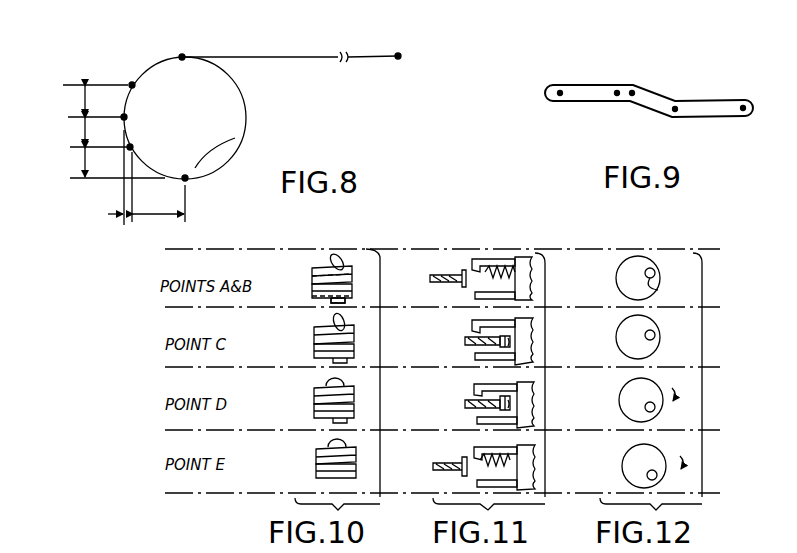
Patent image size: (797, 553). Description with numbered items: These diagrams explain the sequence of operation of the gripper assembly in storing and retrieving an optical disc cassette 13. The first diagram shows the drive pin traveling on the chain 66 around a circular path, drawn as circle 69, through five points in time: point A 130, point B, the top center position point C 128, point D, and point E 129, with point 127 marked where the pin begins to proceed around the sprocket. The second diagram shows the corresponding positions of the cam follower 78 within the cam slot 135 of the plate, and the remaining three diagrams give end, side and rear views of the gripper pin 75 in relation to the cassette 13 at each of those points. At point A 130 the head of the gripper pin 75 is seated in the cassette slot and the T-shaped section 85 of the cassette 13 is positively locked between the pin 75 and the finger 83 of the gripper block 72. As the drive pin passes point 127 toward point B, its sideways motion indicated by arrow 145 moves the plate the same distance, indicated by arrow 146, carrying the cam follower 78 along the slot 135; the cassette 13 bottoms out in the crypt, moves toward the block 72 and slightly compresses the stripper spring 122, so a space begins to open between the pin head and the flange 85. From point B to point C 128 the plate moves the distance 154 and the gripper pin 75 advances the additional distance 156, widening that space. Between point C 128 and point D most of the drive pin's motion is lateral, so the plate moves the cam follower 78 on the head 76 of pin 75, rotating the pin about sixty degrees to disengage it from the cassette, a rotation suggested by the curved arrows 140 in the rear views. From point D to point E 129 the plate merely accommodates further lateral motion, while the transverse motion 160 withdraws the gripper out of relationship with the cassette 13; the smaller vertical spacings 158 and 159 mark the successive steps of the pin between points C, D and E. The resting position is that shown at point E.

In FIG. 10, the optical disc cassette 13 is at (350, 258).
In FIG. 11, the optical disc cassette 13 is at (445, 280).
In FIG. 8, the chain 66 is at (306, 58).
In FIG. 8, the cam circle 69 is at (246, 114).
In FIG. 11, the gripper block 72 is at (526, 258).
In FIG. 10, the gripper pin 75 is at (337, 252).
In FIG. 11, the gripper pin 75 is at (500, 250).
In FIG. 12, the head of pin 76 is at (618, 267).
In FIG. 12, the cam follower 78 is at (658, 290).
In FIG. 10, the finger 83 is at (330, 306).
In FIG. 11, the finger 83 is at (470, 296).
In FIG. 10, the T-shaped section 85 is at (329, 265).
In FIG. 11, the T-shaped section 85 is at (489, 260).
In FIG. 11, the stripper spring 122 is at (505, 282).
In FIG. 8, the point 127 is at (186, 56).
In FIG. 8, the top center position 128 is at (145, 117).
In FIG. 8, the point E 129 is at (238, 140).
In FIG. 8, the point A 130 is at (400, 60).
In FIG. 9, the cam slot 135 is at (703, 98).
In FIG. 12, the rotation direction 140 is at (678, 395).
In FIG. 8, the arrow 145 is at (136, 63).
In FIG. 8, the arrow 146 is at (118, 74).
In FIG. 8, the distance 154 is at (77, 102).
In FIG. 8, the distance 156 is at (128, 225).
In FIG. 8, the dimension 158 is at (80, 132).
In FIG. 8, the dimension 159 is at (80, 163).
In FIG. 8, the transverse motion 160 is at (160, 222).